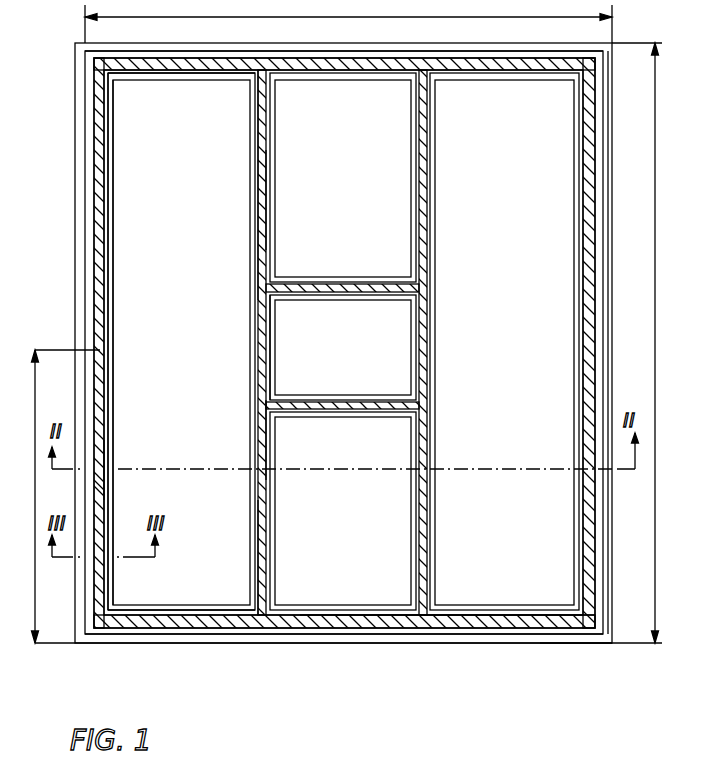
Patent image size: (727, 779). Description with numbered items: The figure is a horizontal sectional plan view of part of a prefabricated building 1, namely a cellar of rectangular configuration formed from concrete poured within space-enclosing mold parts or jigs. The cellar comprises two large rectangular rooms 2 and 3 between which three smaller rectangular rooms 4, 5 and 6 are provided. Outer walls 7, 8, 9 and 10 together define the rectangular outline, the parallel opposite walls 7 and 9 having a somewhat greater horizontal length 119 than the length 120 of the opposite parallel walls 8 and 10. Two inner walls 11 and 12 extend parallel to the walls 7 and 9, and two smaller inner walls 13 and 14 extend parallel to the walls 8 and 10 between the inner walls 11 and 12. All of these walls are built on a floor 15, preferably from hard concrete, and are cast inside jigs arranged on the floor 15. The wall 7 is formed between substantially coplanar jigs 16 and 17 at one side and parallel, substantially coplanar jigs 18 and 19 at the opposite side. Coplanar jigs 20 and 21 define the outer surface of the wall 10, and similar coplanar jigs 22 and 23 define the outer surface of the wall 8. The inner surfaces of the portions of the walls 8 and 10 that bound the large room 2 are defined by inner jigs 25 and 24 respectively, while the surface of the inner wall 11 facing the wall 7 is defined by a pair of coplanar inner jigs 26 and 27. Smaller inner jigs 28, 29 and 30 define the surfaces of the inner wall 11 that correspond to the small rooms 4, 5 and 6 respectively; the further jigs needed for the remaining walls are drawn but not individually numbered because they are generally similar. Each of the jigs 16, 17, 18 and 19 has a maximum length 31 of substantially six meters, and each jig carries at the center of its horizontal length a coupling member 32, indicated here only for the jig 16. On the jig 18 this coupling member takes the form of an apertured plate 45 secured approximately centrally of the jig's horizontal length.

The building 1 is at (612, 255).
The large rectangular room 2 is at (190, 251).
The large rectangular room 3 is at (511, 251).
The smaller rectangular room 4 is at (347, 189).
The smaller rectangular room 5 is at (356, 363).
The smaller rectangular room 6 is at (358, 531).
The outer wall 7 is at (97, 103).
The outer wall 8 is at (322, 58).
The outer wall 9 is at (596, 302).
The outer wall 10 is at (403, 625).
The inner wall 11 is at (262, 315).
The inner wall 12 is at (427, 312).
The smaller inner wall 13 is at (372, 284).
The smaller inner wall 14 is at (322, 409).
The floor 15 is at (567, 645).
The jig 16 is at (96, 588).
The jig 17 is at (95, 268).
The jig 18 is at (105, 373).
The jig 19 is at (108, 326).
The jig 20 is at (284, 633).
The jig 21 is at (364, 635).
The jig 22 is at (340, 52).
The jig 23 is at (414, 53).
The inner jig 24 is at (190, 608).
The inner jig 25 is at (186, 80).
The inner jig 26 is at (262, 186).
The inner jig 27 is at (262, 434).
The smaller inner jig 28 is at (268, 158).
The smaller inner jig 29 is at (268, 360).
The smaller inner jig 30 is at (268, 562).
The maximum length 31 is at (62, 496).
The coupling member 32 is at (90, 490).
The apertured plate 45 is at (110, 470).
The horizontal length 119 is at (655, 373).
The length 120 is at (177, 16).